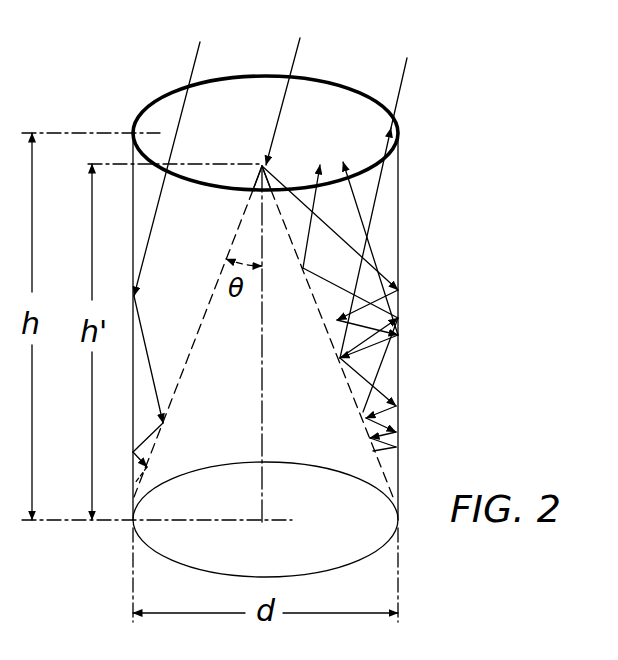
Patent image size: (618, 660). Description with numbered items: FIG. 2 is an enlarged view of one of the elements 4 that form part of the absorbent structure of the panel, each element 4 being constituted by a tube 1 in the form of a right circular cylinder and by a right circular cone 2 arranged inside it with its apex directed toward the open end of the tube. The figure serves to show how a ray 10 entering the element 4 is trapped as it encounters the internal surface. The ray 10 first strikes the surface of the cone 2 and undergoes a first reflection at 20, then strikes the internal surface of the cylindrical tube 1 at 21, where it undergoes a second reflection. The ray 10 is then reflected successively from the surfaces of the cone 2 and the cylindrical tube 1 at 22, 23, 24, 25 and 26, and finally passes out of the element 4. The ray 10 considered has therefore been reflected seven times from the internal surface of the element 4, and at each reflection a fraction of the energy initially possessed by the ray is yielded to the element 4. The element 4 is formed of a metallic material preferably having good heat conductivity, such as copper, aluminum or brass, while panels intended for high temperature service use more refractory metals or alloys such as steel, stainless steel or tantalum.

The tube 1 is at (153, 98).
The cone 2 is at (213, 290).
The element 4 is at (421, 222).
The ray 10 is at (302, 50).
The first reflection point 20 is at (268, 171).
The second reflection point 21 is at (398, 291).
The third reflection point 22 is at (330, 323).
The fourth reflection point 23 is at (398, 337).
The fifth reflection point 24 is at (333, 355).
The sixth reflection point 25 is at (398, 318).
The seventh reflection point 26 is at (303, 268).